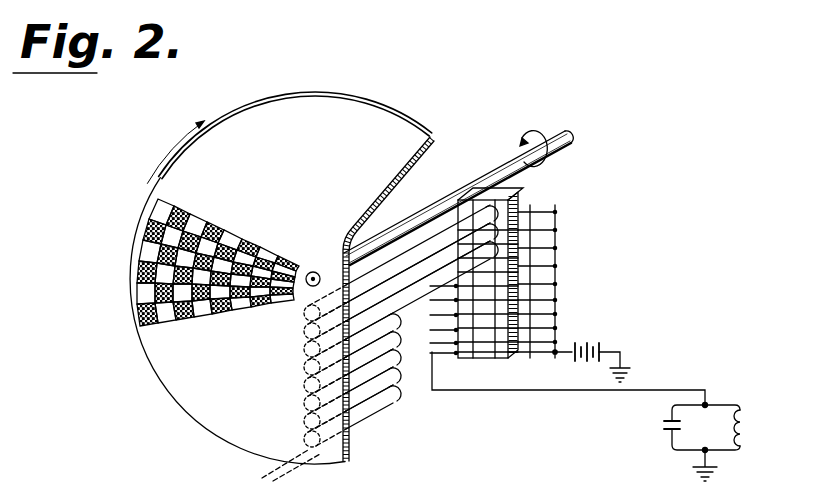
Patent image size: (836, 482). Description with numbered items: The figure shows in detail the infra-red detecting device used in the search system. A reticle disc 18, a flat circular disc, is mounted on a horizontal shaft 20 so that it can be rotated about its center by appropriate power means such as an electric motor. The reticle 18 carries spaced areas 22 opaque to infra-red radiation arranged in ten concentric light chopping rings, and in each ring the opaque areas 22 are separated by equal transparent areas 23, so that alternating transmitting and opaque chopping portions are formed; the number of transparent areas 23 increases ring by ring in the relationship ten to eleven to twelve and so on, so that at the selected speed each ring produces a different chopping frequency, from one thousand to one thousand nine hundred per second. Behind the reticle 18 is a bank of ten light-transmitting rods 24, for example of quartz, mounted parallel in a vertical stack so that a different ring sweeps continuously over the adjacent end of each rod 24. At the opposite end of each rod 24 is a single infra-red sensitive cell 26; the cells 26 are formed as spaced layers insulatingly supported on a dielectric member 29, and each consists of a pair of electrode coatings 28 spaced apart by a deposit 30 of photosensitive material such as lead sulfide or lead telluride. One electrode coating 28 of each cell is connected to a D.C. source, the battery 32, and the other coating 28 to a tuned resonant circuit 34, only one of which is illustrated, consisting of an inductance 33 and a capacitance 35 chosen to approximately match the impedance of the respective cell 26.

The reticle disc 18 is at (364, 72).
The horizontal shaft 20 is at (566, 129).
The opaque areas 22 is at (168, 256).
The transparent areas 23 is at (240, 222).
The light-transmitting rods 24 is at (427, 262).
The infra-red sensitive cell 26 is at (518, 208).
The electrode coatings 28 is at (466, 195).
The dielectric member 29 is at (536, 160).
The deposit of infra-red photosensitive material 30 is at (496, 189).
The battery 32 is at (590, 346).
The inductance 33 is at (746, 430).
The tuned resonant circuit 34 is at (717, 405).
The capacitance 35 is at (664, 426).